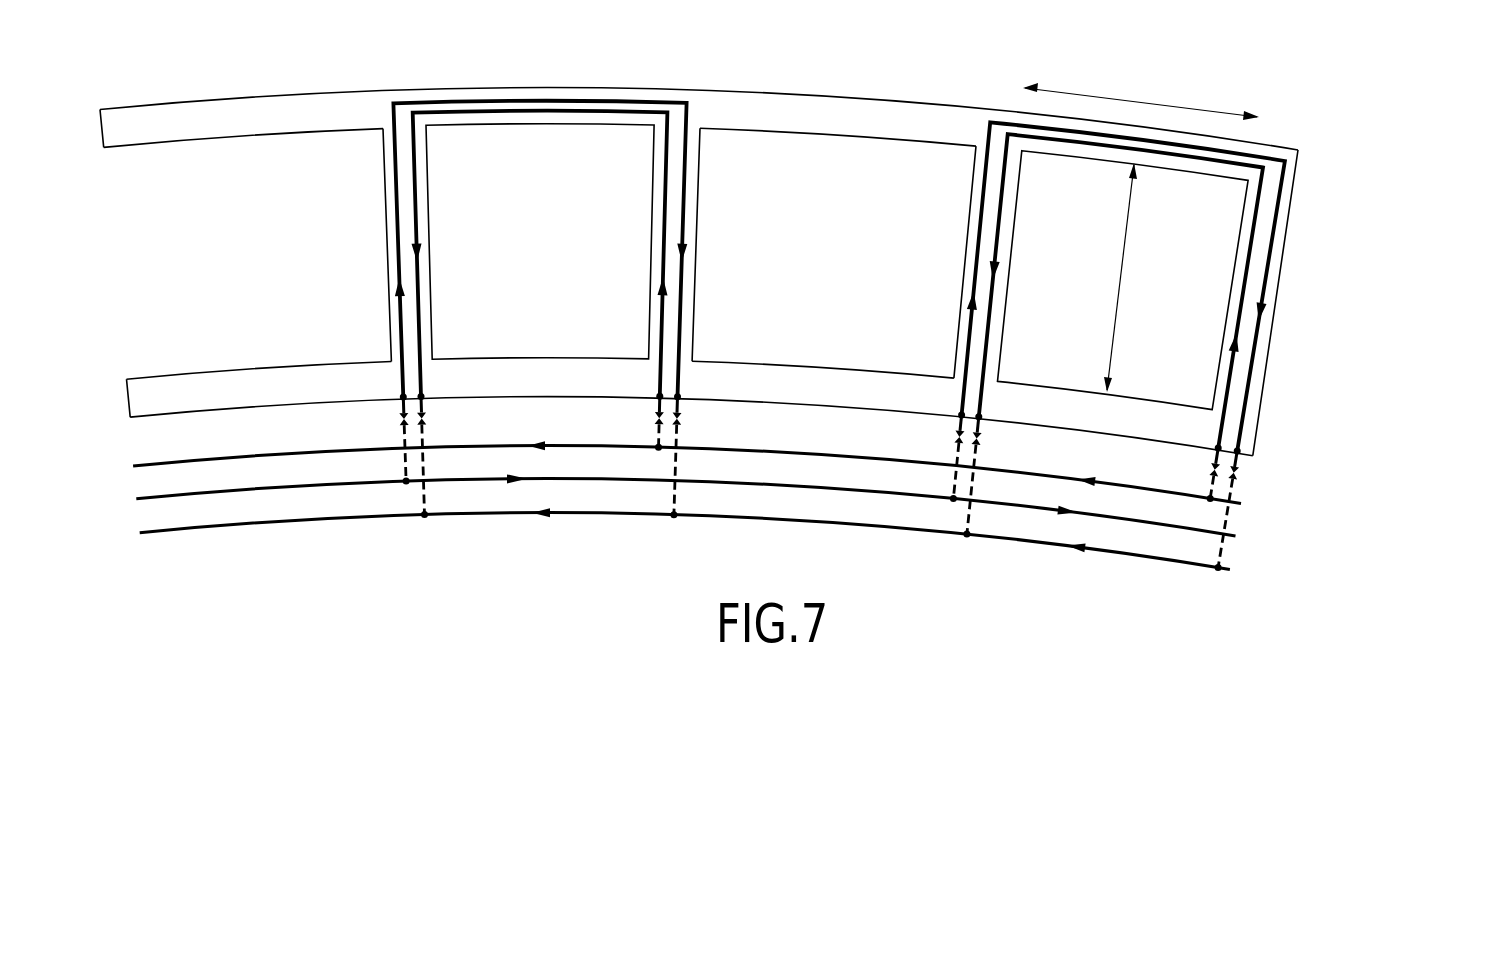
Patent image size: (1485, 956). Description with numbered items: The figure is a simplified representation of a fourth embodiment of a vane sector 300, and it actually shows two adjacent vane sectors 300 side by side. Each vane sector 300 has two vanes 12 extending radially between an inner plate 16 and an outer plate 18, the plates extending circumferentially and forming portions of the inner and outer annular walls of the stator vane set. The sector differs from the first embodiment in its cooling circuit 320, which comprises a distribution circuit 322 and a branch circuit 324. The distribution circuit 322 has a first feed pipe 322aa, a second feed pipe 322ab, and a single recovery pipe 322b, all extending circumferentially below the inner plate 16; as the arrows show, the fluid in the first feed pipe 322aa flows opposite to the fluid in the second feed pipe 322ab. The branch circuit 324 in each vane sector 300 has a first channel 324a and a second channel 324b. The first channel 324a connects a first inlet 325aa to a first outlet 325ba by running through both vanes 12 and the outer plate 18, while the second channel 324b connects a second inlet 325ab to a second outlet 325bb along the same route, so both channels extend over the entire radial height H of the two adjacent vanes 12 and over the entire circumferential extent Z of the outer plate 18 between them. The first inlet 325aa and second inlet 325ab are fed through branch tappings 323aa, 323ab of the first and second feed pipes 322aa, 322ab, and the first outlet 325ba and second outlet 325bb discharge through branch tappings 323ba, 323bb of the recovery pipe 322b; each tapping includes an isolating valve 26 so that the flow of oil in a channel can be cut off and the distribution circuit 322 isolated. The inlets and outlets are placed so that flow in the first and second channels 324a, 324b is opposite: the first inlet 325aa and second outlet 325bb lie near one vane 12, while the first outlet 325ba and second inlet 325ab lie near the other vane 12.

The vane sector 300 is at (209, 88).
The outer plate 18 is at (852, 97).
The inner plate 16 is at (812, 364).
The vane 12 is at (1013, 234).
The branch circuit 324 is at (1352, 238).
The first channel 324a is at (1253, 233).
The second channel 324b is at (1248, 392).
The second inlet 325ab is at (958, 425).
The first outlet 325ba is at (981, 427).
The first inlet 325aa is at (1215, 450).
The second outlet 325bb is at (1239, 452).
The isolating valve 26 is at (975, 447).
The cooling circuit 320 is at (1405, 307).
The first feed pipe 322aa is at (1241, 504).
The second feed pipe 322ab is at (1236, 536).
The recovery pipe 322b is at (1230, 570).
The distribution circuit 322 is at (1318, 492).
The branch tapping 323ab is at (953, 499).
The branch tapping 323ba is at (967, 535).
The branch tapping 323aa is at (1210, 498).
The branch tapping 323bb is at (1218, 568).
The radial height H is at (1125, 277).
The circumferential extent Z is at (1141, 96).